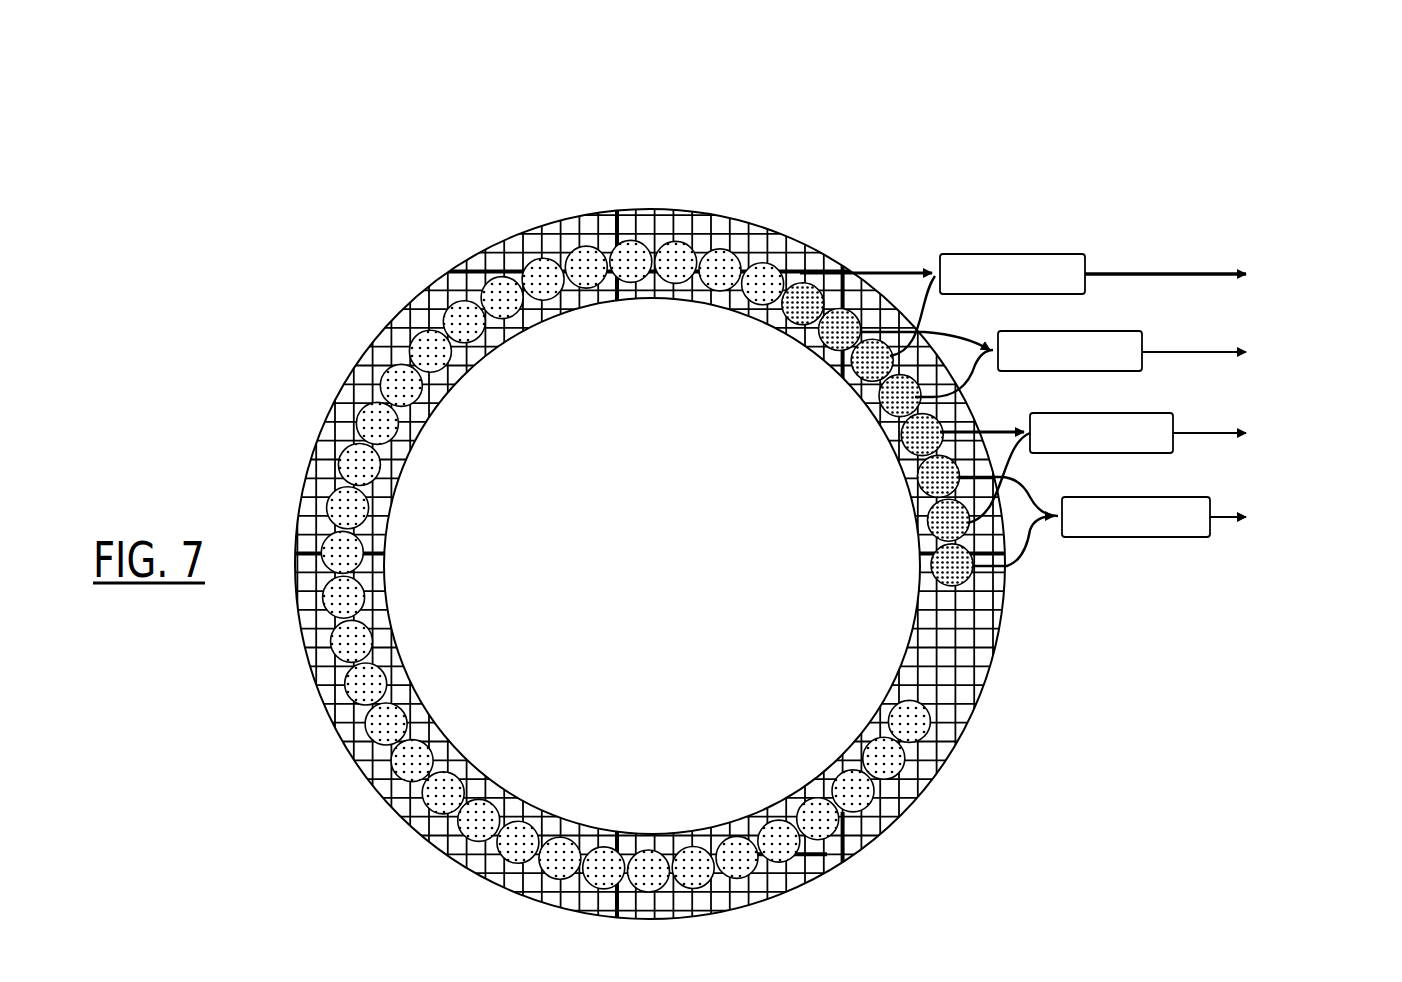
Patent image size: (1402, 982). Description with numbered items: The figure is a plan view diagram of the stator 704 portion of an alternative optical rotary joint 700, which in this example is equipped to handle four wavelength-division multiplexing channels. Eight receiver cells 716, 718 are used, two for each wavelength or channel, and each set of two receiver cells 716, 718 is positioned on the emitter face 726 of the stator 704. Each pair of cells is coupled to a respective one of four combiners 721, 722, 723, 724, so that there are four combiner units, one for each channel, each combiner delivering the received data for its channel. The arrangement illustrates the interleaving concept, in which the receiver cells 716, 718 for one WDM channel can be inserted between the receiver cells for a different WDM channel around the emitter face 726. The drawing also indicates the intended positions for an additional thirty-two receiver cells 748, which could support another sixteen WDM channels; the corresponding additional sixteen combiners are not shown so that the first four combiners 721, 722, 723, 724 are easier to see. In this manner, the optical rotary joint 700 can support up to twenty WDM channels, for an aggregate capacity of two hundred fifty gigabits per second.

The optical rotary joint 700 is at (1039, 94).
The stator 704 is at (651, 204).
The receiver cell 716 is at (973, 590).
The receiver cell 718 is at (812, 292).
The combiner 721 is at (1172, 497).
The combiner 722 is at (1138, 412).
The combiner 723 is at (1098, 331).
The combiner 724 is at (1035, 252).
The emitter face 726 is at (745, 233).
The additional receiver cells 748 is at (440, 790).